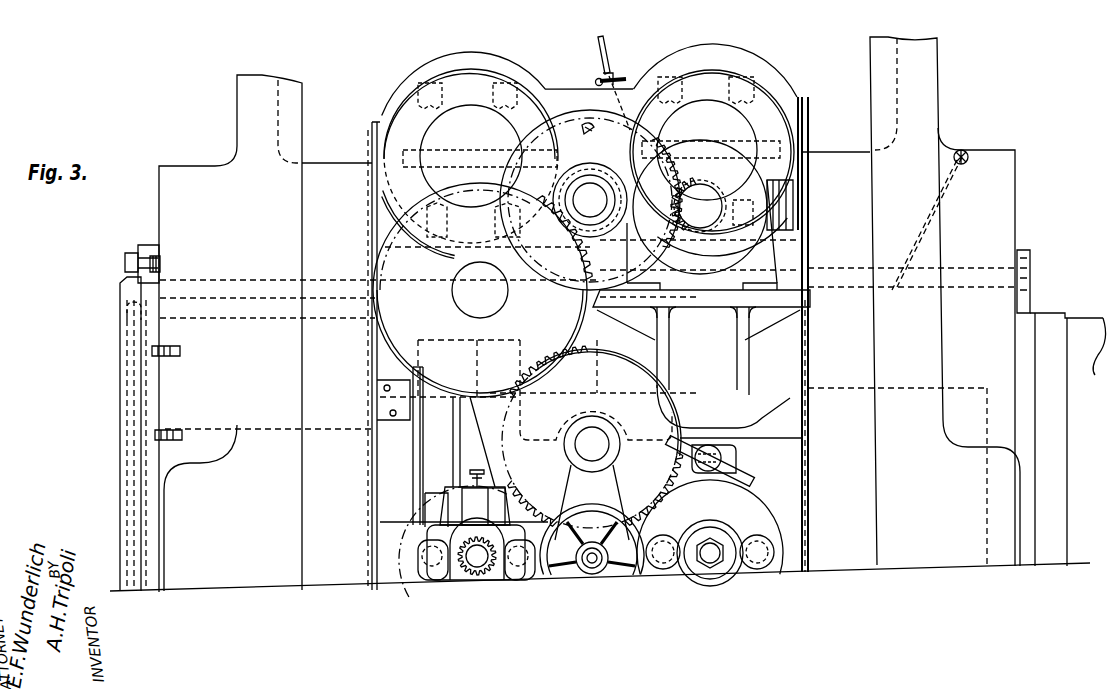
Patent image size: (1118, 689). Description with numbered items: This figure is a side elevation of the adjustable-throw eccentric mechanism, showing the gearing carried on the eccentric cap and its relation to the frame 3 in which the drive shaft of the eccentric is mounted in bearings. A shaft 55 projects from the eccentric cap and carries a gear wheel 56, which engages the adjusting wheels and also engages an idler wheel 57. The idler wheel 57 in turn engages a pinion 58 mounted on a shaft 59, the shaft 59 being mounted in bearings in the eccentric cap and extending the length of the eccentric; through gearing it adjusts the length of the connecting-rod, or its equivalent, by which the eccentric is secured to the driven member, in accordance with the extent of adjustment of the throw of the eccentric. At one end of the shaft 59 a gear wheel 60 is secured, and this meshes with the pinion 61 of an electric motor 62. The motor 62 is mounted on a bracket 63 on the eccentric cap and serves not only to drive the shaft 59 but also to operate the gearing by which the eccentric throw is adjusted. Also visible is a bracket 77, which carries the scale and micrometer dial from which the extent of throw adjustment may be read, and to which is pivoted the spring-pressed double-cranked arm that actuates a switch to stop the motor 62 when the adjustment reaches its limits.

The frame 3 is at (192, 178).
The shaft 55 is at (598, 447).
The gear wheel 56 is at (533, 465).
The idler wheel 57 is at (425, 316).
The pinion 58 is at (577, 130).
The shaft 59 is at (592, 198).
The gear wheel 60 is at (638, 133).
The pinion 61 is at (716, 197).
The electric motor 62 is at (750, 240).
The bracket 63 is at (773, 318).
The bracket 77 is at (432, 555).